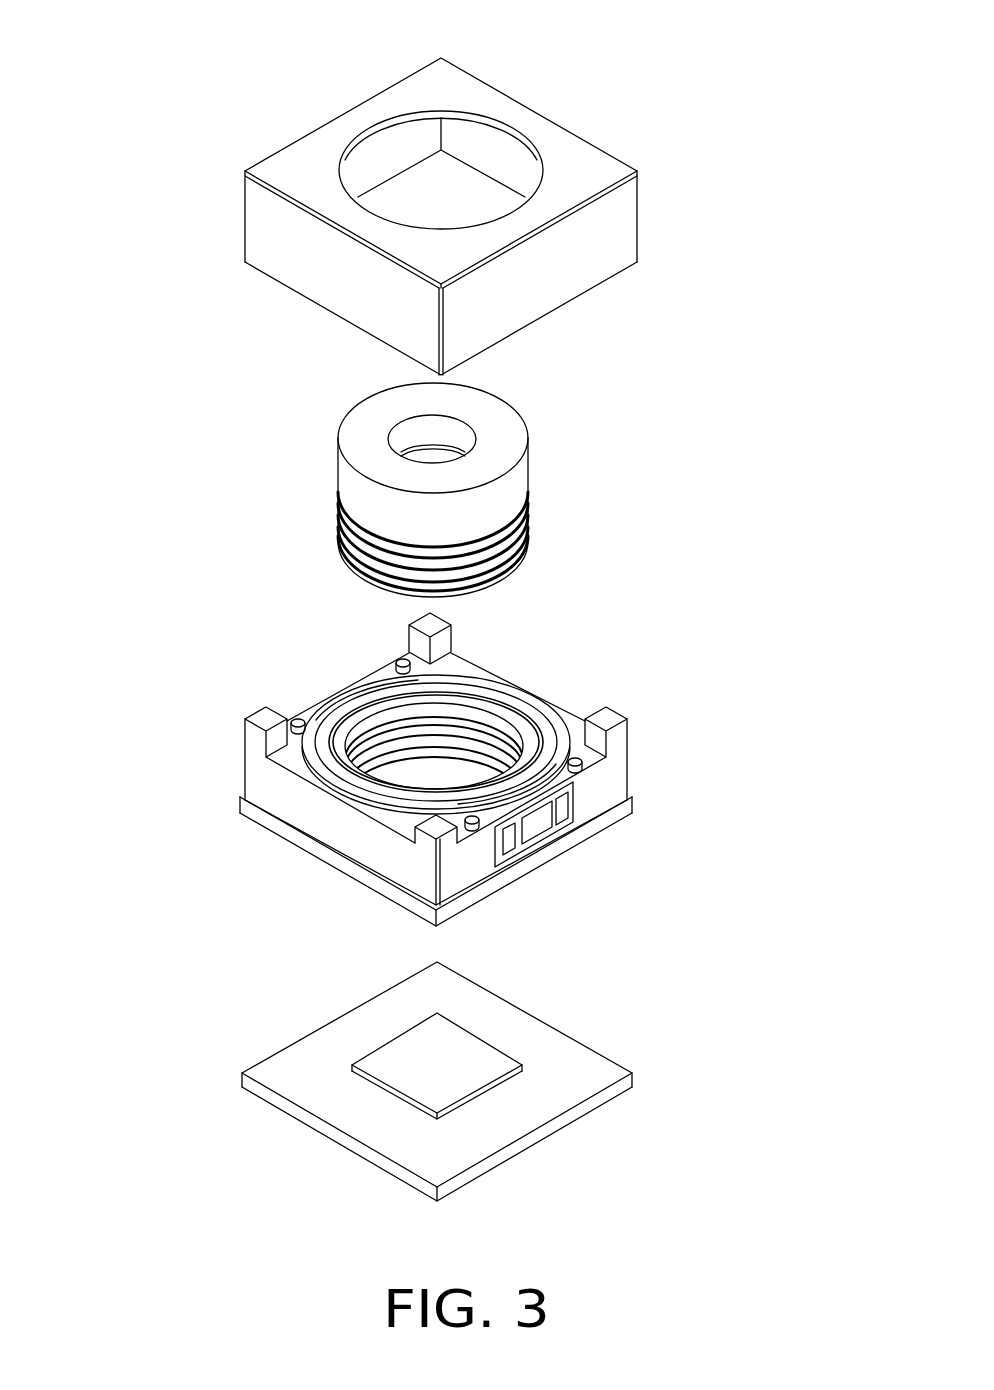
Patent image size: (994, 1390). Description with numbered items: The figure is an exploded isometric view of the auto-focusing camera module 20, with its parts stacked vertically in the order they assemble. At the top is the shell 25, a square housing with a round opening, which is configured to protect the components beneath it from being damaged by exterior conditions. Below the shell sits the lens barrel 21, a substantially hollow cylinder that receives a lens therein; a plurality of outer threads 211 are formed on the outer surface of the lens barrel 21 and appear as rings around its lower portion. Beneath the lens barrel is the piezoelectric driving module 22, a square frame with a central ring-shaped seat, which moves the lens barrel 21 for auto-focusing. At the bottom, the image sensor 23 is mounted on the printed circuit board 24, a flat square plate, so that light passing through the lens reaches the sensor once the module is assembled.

The auto-focusing camera module 20 is at (245, 82).
The lens barrel 21 is at (500, 433).
The outer threads 211 is at (527, 527).
The piezoelectric driving module 22 is at (612, 776).
The image sensor 23 is at (463, 1062).
The printed circuit board 24 is at (573, 1073).
The shell 25 is at (610, 237).